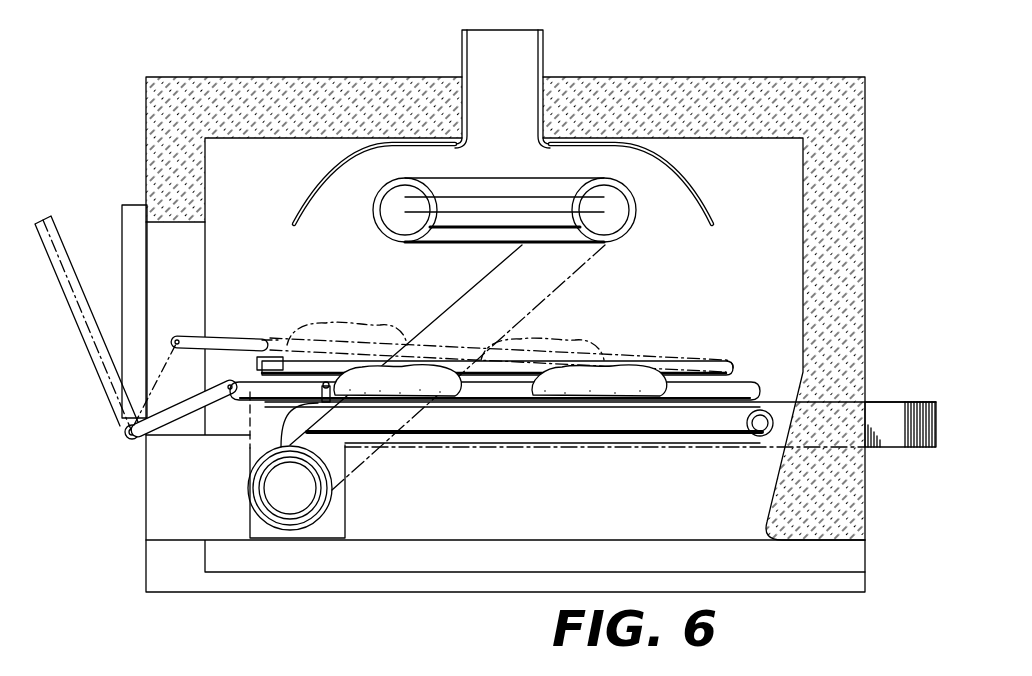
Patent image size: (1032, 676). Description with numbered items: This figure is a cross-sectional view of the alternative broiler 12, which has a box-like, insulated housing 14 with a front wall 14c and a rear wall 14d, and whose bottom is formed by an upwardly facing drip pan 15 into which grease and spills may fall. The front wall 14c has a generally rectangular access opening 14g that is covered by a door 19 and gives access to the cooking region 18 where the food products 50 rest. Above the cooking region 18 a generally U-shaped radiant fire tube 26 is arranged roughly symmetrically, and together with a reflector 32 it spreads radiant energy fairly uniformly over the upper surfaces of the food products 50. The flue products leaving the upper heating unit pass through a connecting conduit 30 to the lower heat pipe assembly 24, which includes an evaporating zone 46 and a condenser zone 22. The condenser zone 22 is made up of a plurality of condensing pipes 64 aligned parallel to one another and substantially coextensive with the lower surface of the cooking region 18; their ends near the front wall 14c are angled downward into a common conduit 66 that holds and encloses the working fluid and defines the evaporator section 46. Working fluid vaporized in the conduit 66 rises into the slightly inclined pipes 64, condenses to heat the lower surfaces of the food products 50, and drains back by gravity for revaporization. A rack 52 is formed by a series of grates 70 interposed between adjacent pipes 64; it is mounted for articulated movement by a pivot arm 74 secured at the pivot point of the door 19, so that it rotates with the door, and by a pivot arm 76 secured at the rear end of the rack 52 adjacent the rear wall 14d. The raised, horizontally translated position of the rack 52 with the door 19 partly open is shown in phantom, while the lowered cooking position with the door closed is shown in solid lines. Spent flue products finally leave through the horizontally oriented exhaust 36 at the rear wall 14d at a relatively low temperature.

The broiler 12 is at (508, 294).
The housing 14 is at (872, 212).
The front wall 14c is at (146, 160).
The rear wall 14d is at (868, 325).
The access opening 14g is at (190, 270).
The drip pan 15 is at (392, 574).
The cooking region 18 is at (678, 396).
The door 19 is at (122, 218).
The condenser zone 22 is at (684, 448).
The heat pipe assembly 24 is at (248, 448).
The radiant fire tube 26 is at (535, 176).
The connecting conduit 30 is at (490, 272).
The reflector 32 is at (690, 180).
The exhaust 36 is at (870, 452).
The evaporating zone 46 is at (286, 488).
The food products 50 is at (340, 365).
The rack 52 is at (290, 365).
The condensing pipes 64 is at (664, 430).
The common conduit 66 is at (332, 505).
The grates 70 is at (318, 398).
The pivot arm 74 is at (222, 384).
The pivot arm 76 is at (740, 394).